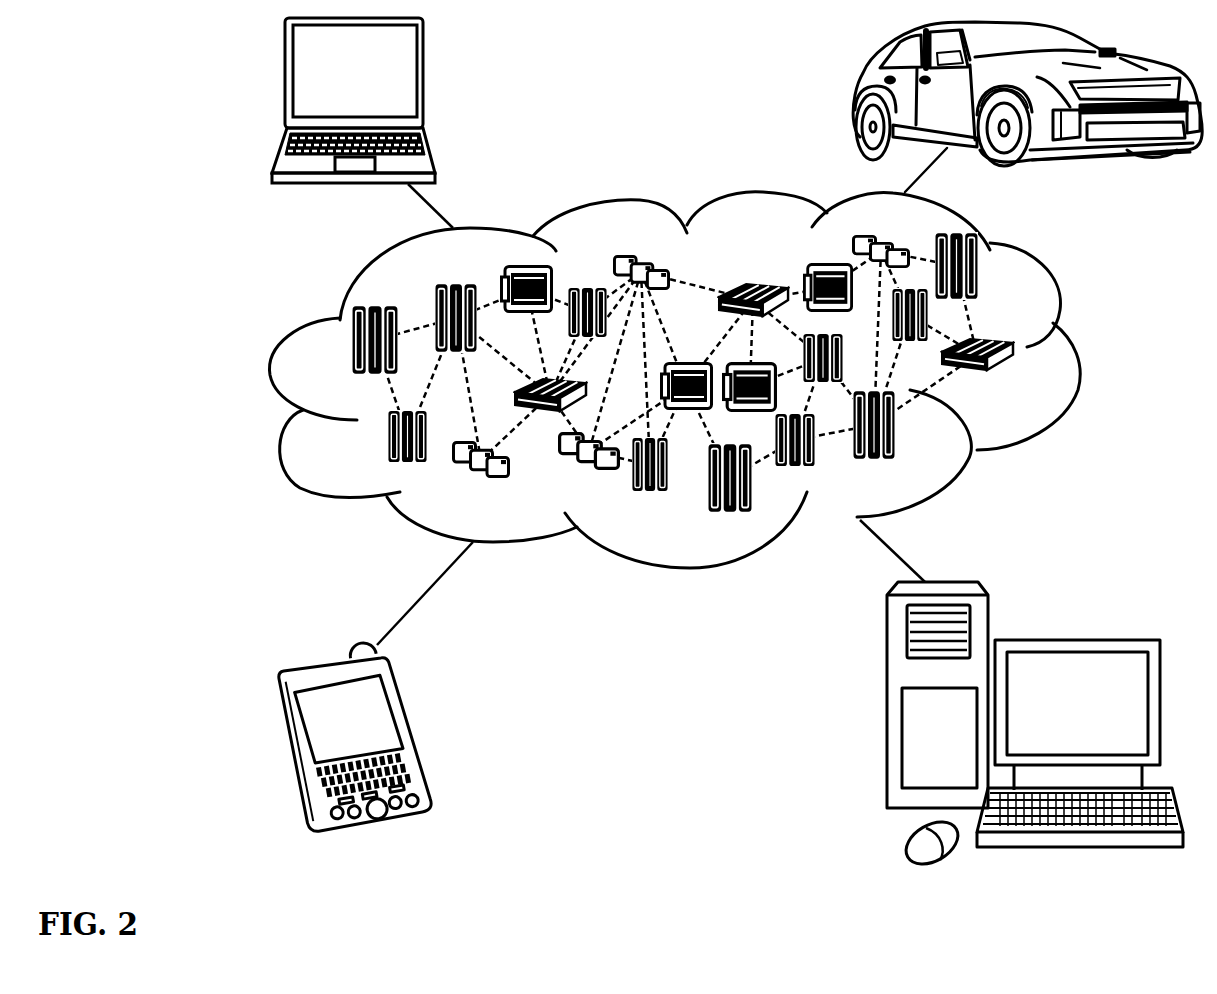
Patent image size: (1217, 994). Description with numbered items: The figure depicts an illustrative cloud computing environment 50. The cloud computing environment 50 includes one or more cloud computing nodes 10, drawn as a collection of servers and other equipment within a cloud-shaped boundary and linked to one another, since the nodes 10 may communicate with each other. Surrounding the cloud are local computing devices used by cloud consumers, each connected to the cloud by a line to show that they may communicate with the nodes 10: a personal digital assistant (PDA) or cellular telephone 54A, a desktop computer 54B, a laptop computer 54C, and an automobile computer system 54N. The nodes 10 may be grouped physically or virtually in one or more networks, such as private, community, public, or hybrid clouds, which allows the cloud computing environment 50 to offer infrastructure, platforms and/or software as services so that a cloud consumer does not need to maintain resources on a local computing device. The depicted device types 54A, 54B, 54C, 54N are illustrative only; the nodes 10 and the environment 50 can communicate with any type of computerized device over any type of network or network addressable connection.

The cloud computing nodes 10 is at (1018, 379).
The cloud computing environment 50 is at (1077, 350).
The personal digital assistant (PDA) or cellular telephone 54A is at (413, 730).
The desktop computer 54B is at (1075, 640).
The laptop computer 54C is at (425, 79).
The automobile computer system 54N is at (858, 96).